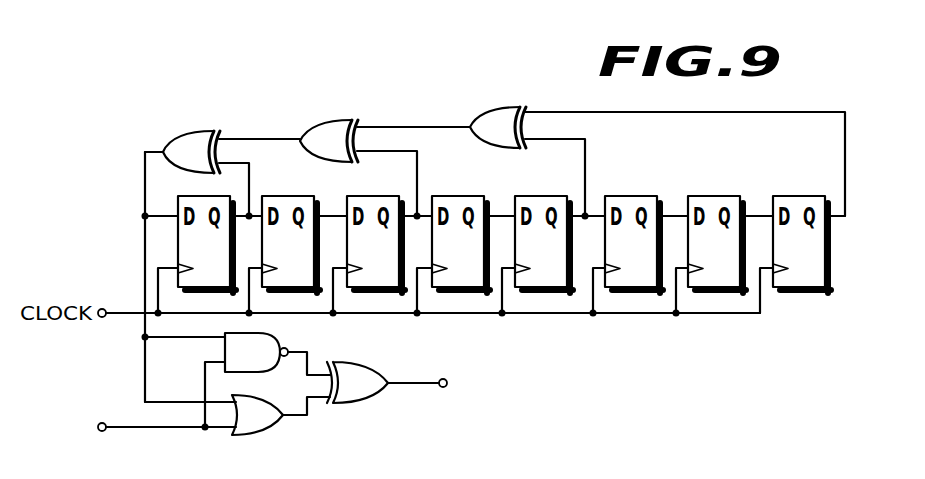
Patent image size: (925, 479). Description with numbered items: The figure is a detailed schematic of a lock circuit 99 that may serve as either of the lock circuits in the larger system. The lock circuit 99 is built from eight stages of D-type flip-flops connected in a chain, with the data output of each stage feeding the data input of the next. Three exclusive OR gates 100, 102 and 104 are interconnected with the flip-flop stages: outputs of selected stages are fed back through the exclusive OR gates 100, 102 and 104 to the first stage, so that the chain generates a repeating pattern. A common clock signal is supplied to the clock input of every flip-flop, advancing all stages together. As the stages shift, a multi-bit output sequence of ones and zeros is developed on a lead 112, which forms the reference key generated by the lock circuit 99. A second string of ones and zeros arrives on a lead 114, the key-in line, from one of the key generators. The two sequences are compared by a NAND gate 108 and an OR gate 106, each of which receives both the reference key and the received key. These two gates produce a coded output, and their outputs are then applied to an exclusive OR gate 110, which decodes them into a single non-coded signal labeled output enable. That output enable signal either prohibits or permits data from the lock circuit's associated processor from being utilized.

The lock circuit 99 is at (127, 152).
The exclusive OR gate 100 is at (500, 107).
The exclusive OR gate 102 is at (334, 120).
The exclusive OR gate 104 is at (197, 131).
The OR gate 106 is at (278, 433).
The NAND gate 108 is at (278, 372).
The exclusive OR gate 110 is at (352, 362).
The lead 112 is at (186, 338).
The lead (key in) 114 is at (134, 429).